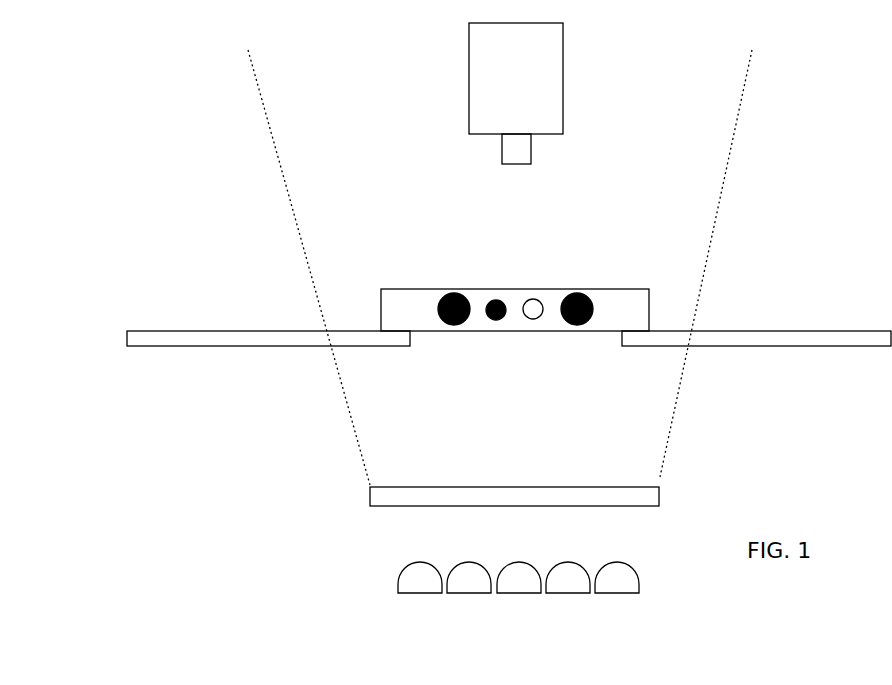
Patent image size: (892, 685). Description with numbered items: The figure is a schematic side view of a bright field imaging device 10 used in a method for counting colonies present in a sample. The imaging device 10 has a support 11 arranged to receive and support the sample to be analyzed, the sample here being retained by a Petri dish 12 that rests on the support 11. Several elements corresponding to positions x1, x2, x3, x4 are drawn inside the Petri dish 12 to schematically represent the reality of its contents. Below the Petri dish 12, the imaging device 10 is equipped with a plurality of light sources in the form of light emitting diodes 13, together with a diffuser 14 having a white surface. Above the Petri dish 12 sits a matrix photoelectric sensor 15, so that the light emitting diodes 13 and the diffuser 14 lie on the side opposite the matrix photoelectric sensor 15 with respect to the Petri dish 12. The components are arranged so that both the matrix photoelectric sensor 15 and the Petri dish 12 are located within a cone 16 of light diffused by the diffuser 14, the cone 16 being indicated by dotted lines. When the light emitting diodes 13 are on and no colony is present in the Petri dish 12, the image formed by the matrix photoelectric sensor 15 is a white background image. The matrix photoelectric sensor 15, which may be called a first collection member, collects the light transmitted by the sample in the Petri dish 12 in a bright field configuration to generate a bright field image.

The bright field imaging device 10 is at (148, 566).
The support 11 is at (148, 337).
The Petri dish 12 is at (637, 311).
The light emitting diodes 13 is at (378, 583).
The diffuser 14 is at (368, 495).
The matrix photoelectric sensor 15 is at (467, 70).
The cone of light 16 is at (270, 135).
The position x1 is at (453, 328).
The position x2 is at (495, 323).
The position x3 is at (533, 322).
The position x4 is at (577, 328).